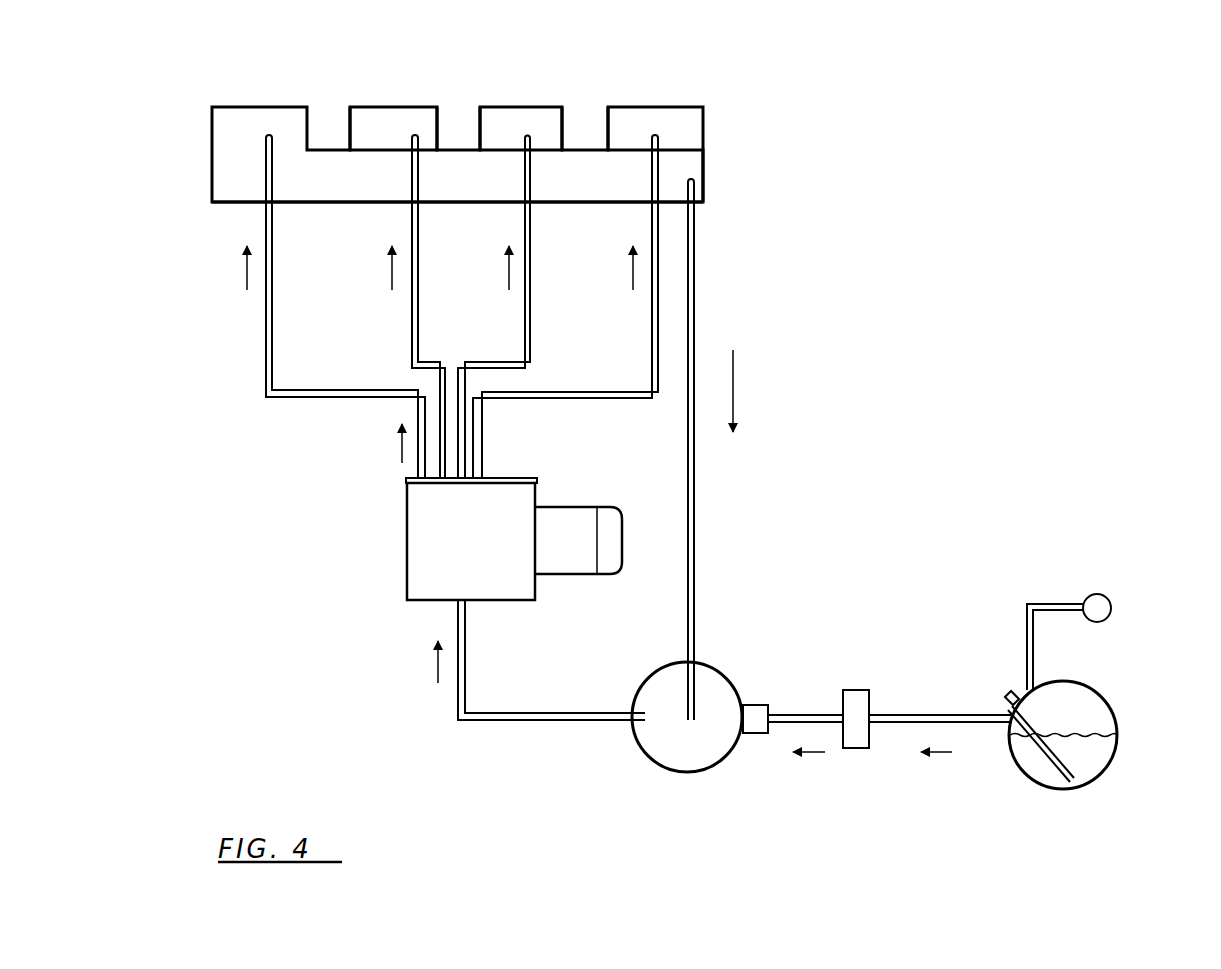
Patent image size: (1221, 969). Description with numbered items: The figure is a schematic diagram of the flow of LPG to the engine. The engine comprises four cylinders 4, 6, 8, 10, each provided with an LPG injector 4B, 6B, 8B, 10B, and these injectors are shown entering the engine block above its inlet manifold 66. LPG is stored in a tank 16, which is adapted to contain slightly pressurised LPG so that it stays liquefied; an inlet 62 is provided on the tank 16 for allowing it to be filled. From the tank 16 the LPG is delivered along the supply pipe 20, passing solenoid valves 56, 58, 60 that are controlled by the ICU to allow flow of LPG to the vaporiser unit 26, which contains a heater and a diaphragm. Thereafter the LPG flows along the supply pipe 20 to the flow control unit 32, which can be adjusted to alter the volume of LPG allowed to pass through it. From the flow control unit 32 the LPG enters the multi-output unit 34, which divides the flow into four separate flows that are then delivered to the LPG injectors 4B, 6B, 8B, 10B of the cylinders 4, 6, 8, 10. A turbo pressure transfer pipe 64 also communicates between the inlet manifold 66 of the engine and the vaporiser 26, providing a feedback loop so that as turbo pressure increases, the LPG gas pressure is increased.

The cylinder 4 is at (238, 140).
The cylinder 6 is at (430, 118).
The cylinder 8 is at (542, 125).
The cylinder 10 is at (683, 128).
The LPG injector 4B is at (272, 135).
The LPG injector 6B is at (415, 135).
The LPG injector 8B is at (525, 135).
The LPG injector 10B is at (653, 135).
The inlet manifold 66 is at (714, 170).
The multi-output unit 34 is at (483, 478).
The flow control unit 32 is at (427, 553).
The supply pipe 20 is at (493, 730).
The vaporiser unit 26 is at (670, 755).
The turbo pressure transfer pipe 64 is at (693, 520).
The solenoid valve 60 is at (753, 705).
The solenoid valve 58 is at (857, 705).
The tank 16 is at (1080, 763).
The solenoid valve 56 is at (1008, 695).
The inlet 62 is at (1110, 608).